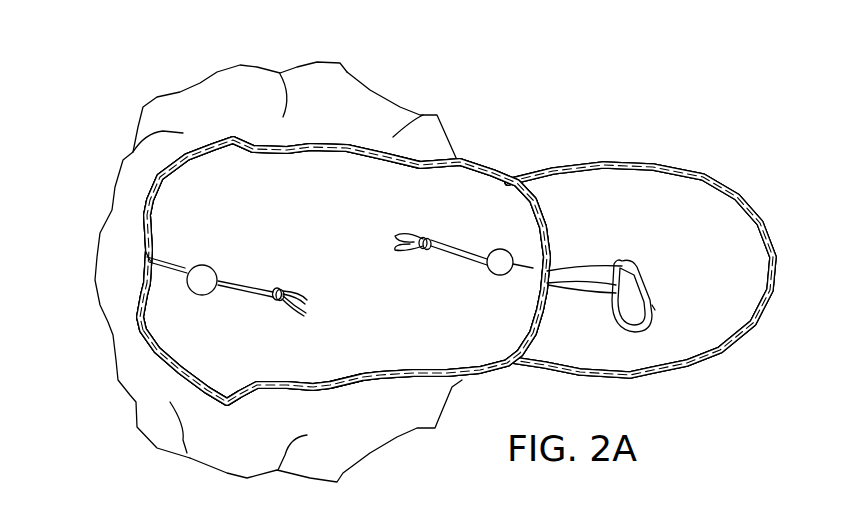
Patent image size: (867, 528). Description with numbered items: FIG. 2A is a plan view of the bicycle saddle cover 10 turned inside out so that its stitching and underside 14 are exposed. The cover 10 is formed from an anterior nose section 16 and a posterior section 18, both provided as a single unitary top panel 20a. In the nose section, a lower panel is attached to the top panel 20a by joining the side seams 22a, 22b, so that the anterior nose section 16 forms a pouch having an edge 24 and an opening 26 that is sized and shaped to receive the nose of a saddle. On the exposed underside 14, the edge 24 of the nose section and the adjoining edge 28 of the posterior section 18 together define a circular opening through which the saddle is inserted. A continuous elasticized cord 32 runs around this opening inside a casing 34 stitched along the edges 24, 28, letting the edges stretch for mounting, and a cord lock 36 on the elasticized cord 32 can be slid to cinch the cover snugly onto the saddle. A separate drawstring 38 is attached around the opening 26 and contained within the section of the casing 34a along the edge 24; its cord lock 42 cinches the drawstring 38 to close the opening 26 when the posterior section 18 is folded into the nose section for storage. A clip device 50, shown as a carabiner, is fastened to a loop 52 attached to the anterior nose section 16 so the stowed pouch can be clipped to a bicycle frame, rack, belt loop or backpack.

The cover 10 is at (415, 251).
The underside 14 is at (207, 92).
The anterior nose section 16 is at (693, 203).
The posterior section 18 is at (337, 75).
The top panel 20a is at (357, 100).
The side seam 22a is at (690, 364).
The side seam 22b is at (738, 336).
The edge 24 is at (523, 323).
The opening 26 is at (516, 295).
The edge 28 is at (377, 375).
The elasticized cord 32 is at (246, 283).
The casing 34 is at (503, 180).
The section of the casing 34a is at (527, 213).
The cord lock 36 is at (204, 264).
The drawstring 38 is at (445, 258).
The cord lock 42 is at (507, 248).
The clip device 50 is at (654, 313).
The loop 52 is at (580, 273).